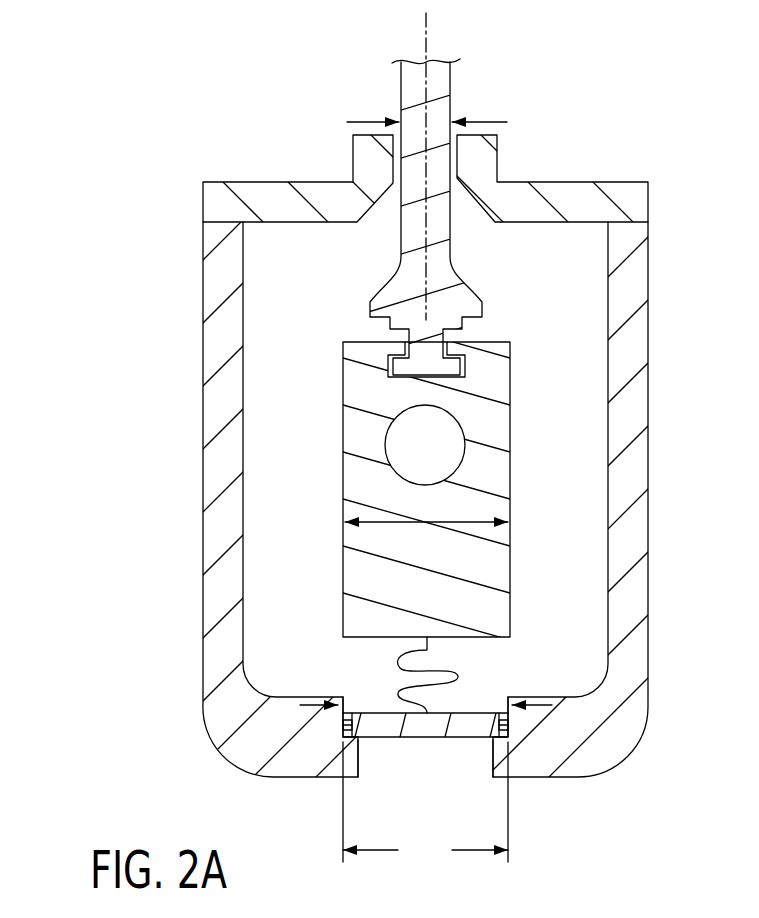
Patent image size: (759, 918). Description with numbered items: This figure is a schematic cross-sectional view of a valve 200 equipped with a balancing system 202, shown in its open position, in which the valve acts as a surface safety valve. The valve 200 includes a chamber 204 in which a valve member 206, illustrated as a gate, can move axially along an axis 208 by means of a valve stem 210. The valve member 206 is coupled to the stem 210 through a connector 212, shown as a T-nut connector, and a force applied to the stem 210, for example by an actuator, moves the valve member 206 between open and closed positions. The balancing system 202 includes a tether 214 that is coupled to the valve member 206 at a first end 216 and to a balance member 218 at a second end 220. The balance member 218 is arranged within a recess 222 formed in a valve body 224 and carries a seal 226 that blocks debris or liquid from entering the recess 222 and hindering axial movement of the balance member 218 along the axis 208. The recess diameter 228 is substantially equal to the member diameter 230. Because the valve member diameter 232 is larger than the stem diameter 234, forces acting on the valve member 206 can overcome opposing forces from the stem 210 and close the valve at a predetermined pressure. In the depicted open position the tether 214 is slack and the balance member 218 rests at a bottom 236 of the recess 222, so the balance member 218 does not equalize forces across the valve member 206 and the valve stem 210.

The valve 200 is at (548, 60).
The balancing system 202 is at (173, 650).
The chamber 204 is at (240, 325).
The valve member 206 is at (397, 590).
The axis 208 is at (422, 40).
The valve stem 210 is at (450, 213).
The connector 212 is at (452, 340).
The tether 214 is at (457, 677).
The first end 216 is at (438, 603).
The balance member 218 is at (419, 742).
The second end 220 is at (380, 688).
The recess 222 is at (523, 787).
The valve body 224 is at (628, 720).
The seal 226 is at (340, 727).
The recess diameter 228 is at (300, 706).
The member diameter 230 is at (425, 804).
The valve member diameter 232 is at (469, 519).
The stem diameter 234 is at (347, 121).
The bottom 236 is at (515, 725).